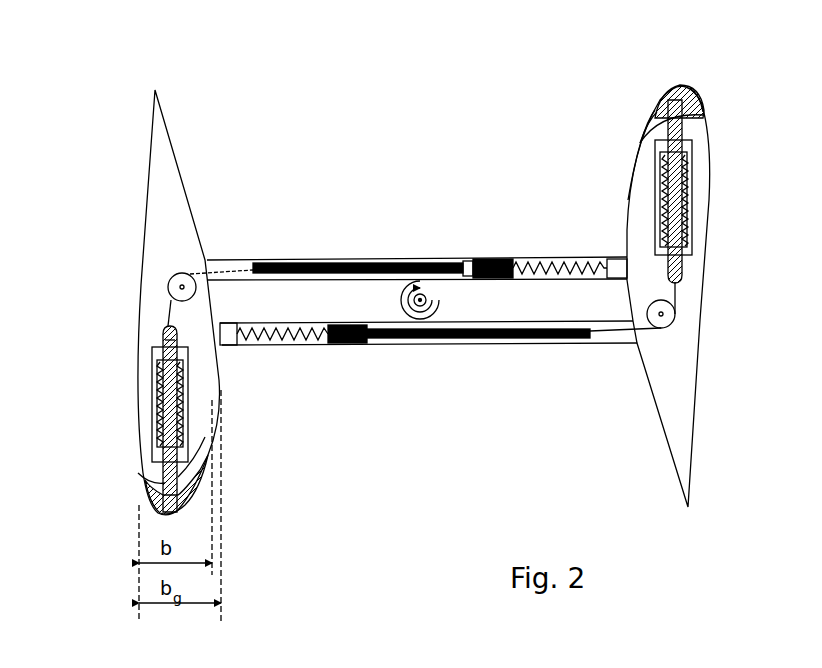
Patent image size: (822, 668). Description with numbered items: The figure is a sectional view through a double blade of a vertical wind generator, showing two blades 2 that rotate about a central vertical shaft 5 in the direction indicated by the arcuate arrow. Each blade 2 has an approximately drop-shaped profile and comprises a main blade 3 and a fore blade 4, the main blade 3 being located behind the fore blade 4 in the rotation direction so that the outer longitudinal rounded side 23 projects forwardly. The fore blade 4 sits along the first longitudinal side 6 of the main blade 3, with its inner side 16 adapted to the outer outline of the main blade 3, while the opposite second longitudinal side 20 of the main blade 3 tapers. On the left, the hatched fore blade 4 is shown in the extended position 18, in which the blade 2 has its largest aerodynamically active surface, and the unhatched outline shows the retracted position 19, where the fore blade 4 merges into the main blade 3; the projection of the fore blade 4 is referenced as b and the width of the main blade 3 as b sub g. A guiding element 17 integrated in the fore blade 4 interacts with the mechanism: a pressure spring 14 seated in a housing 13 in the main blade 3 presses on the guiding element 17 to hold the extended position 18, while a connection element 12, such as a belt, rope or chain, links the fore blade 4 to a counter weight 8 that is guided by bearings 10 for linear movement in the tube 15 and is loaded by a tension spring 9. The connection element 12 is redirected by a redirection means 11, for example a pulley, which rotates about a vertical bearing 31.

The blade 2 is at (745, 118).
The main blade 3 is at (683, 367).
The fore blade 4 is at (657, 105).
The central vertical shaft 5 is at (419, 297).
The first longitudinal side 6 is at (687, 110).
The counter weight 8 is at (420, 246).
The tension spring 9 is at (565, 255).
The bearings 10 is at (414, 228).
The redirection means 11 is at (143, 302).
The connection element 12 is at (163, 308).
The housing 13 is at (121, 376).
The pressure spring 14 is at (111, 419).
The rod assembly or tube 15 is at (389, 323).
The inner side 16 is at (655, 122).
The guiding element 17 is at (170, 423).
The extended position 18 is at (115, 506).
The retracted position 19 is at (150, 462).
The second longitudinal side 20 is at (695, 530).
The outer longitudinal rounded side 23 is at (658, 92).
The vertical bearing 31 is at (174, 278).